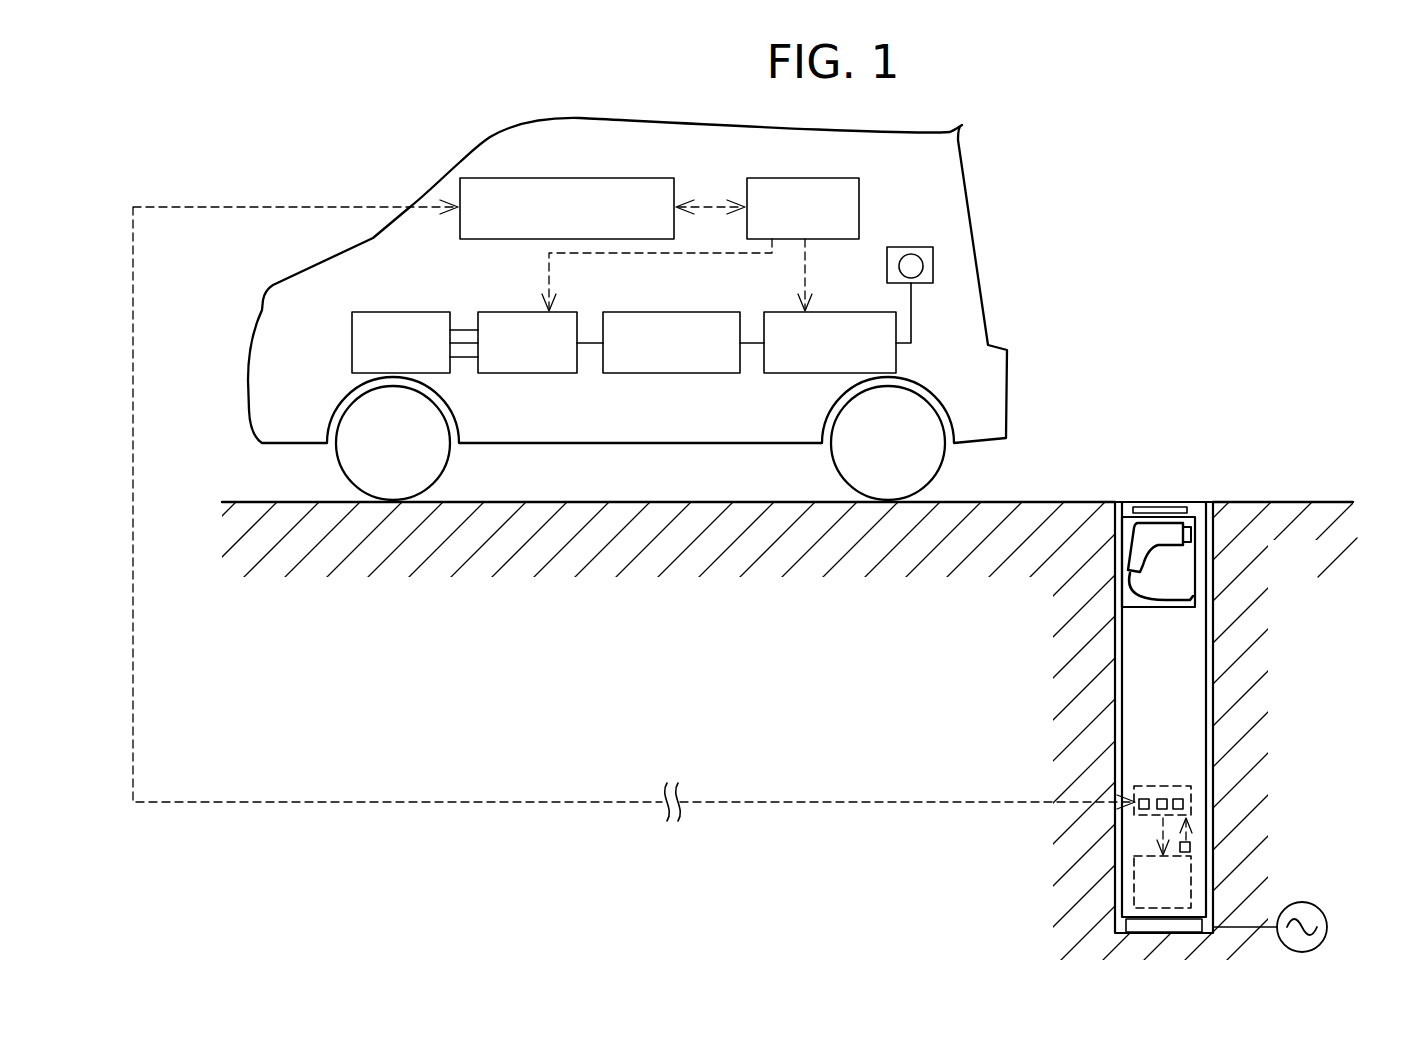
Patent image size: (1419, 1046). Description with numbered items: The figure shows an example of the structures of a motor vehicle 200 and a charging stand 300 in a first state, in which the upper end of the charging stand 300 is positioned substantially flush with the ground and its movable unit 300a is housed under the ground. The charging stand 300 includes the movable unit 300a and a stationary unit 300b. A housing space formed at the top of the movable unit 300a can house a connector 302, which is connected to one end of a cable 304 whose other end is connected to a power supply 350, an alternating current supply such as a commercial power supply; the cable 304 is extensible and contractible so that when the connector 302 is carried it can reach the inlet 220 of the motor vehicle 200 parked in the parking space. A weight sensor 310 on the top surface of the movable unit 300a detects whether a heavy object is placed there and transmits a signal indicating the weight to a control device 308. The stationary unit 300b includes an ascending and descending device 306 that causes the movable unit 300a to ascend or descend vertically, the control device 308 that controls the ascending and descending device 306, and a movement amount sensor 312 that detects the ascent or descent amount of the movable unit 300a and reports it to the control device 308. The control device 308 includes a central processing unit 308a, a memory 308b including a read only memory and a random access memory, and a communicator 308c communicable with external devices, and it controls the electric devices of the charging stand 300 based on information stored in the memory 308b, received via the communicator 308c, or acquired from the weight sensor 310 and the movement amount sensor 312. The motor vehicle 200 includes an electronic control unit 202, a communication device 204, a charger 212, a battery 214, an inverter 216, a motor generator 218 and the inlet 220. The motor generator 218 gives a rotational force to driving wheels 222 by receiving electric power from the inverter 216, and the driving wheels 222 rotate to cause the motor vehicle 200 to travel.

The motor vehicle 200 is at (805, 128).
The electronic control unit 202 is at (790, 178).
The communication device 204 is at (578, 177).
The charger 212 is at (850, 311).
The battery 214 is at (666, 311).
The inverter 216 is at (505, 311).
The motor generator 218 is at (402, 311).
The inlet 220 is at (911, 247).
The driving wheels 222 is at (453, 421).
The charging stand 300 is at (1177, 485).
The movable unit 300a is at (1197, 500).
The stationary unit 300b is at (1140, 928).
The connector 302 is at (1168, 550).
The cable 304 is at (1166, 604).
The ascending and descending device 306 is at (1192, 877).
The control device 308 is at (1192, 804).
The central processing unit 308a is at (1183, 788).
The memory 308b is at (1157, 793).
The communicator 308c is at (1143, 817).
The weight sensor 310 is at (1157, 510).
The movement amount sensor 312 is at (1190, 847).
The power supply 350 is at (1327, 927).